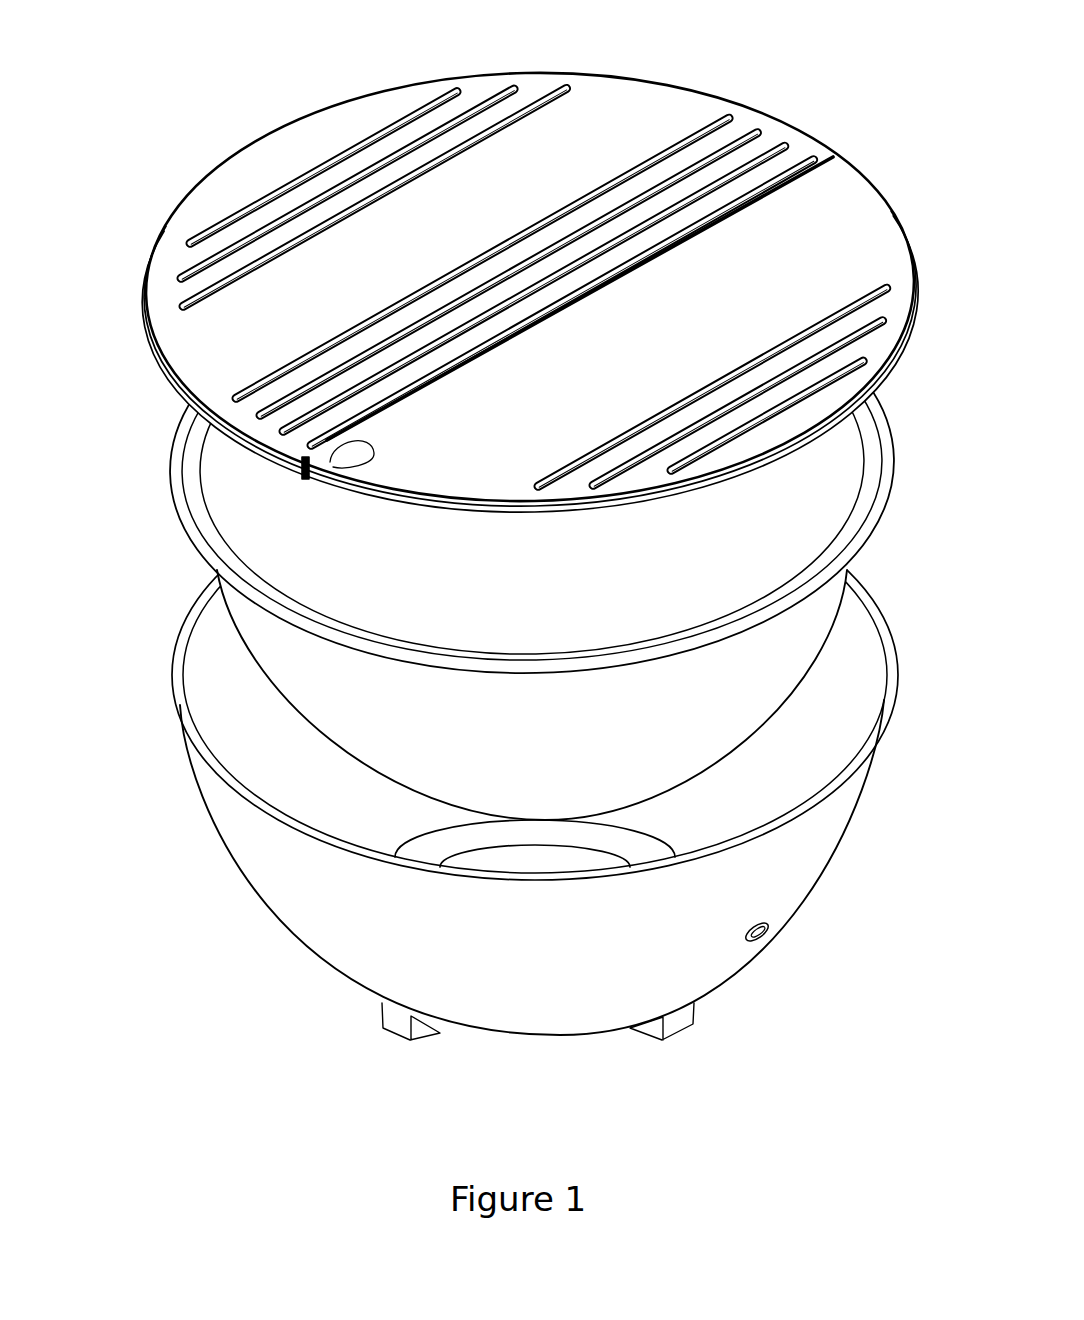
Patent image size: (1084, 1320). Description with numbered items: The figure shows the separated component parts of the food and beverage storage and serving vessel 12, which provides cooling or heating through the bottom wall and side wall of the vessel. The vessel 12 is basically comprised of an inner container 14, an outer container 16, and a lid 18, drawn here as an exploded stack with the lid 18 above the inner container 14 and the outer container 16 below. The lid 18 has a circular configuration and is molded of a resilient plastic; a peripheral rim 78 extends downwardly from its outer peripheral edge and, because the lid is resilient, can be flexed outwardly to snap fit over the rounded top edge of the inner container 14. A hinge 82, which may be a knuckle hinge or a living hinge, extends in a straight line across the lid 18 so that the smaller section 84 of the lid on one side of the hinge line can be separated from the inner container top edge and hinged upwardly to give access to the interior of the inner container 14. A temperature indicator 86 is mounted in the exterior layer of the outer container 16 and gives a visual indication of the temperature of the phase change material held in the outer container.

The food and beverage storage and serving vessel 12 is at (753, 97).
The inner container 14 is at (180, 557).
The outer container 16 is at (250, 902).
The lid 18 is at (140, 330).
The peripheral rim 78 is at (163, 366).
The hinge 82 is at (305, 477).
The smaller section of the lid 84 is at (857, 198).
The temperature indicator 86 is at (771, 937).